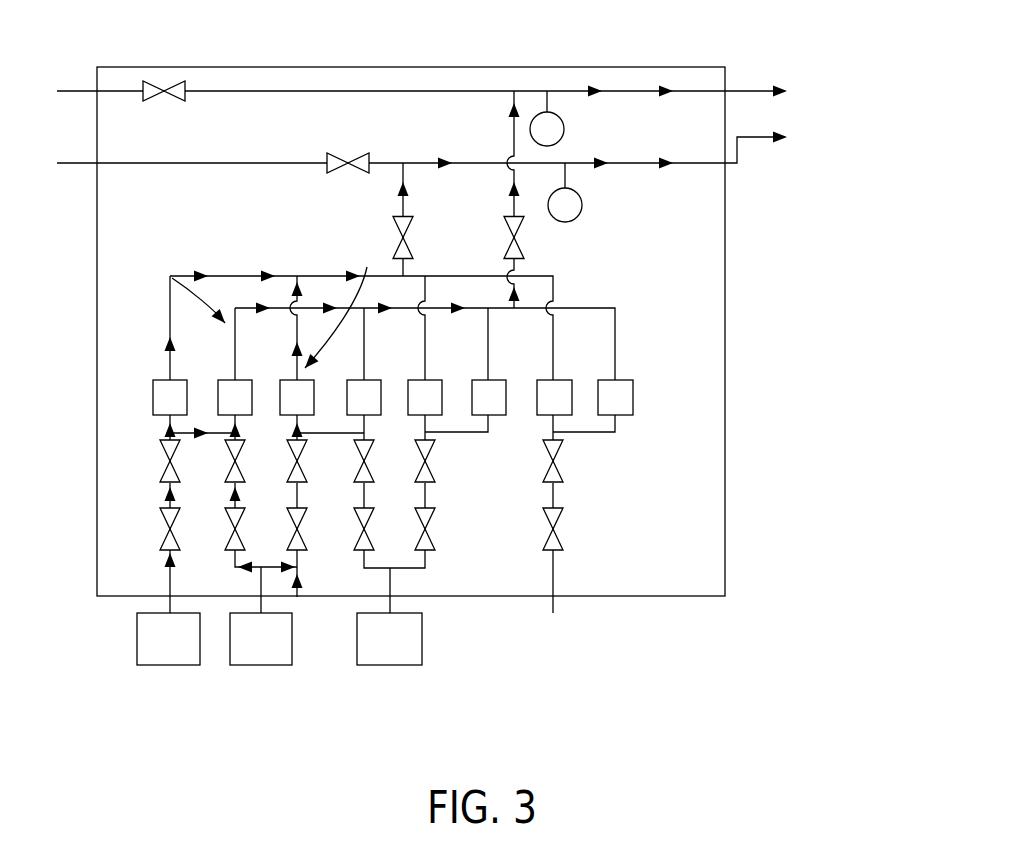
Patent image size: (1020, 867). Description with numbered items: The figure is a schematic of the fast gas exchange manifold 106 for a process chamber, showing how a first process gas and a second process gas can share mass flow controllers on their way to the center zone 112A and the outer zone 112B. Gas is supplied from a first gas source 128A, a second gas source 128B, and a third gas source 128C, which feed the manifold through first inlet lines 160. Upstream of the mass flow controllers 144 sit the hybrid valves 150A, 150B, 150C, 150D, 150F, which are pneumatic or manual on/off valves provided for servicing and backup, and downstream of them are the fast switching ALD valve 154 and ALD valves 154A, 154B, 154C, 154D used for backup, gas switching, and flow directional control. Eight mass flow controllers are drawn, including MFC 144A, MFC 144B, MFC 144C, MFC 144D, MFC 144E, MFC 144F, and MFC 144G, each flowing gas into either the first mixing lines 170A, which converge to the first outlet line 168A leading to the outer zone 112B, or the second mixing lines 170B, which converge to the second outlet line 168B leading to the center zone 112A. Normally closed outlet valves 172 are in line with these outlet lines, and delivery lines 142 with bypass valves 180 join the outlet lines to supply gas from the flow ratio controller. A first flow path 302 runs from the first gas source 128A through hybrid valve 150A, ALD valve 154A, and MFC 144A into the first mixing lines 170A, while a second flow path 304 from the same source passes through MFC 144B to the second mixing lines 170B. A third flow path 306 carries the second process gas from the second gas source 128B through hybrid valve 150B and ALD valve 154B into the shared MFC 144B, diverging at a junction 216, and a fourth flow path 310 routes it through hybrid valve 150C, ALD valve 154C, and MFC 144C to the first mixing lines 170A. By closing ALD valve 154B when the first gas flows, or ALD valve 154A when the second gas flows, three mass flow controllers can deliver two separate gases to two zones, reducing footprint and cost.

The FGE manifold 106 is at (470, 66).
The center zone 112A is at (840, 68).
The outer zone 112B is at (840, 152).
The first gas source 128A is at (190, 656).
The second gas source 128B is at (282, 656).
The third gas source 128C is at (410, 656).
The delivery lines 142 is at (68, 90).
The mass flow controllers 144 is at (635, 360).
The MFC 144A is at (153, 395).
The MFC 144B is at (218, 383).
The MFC 144C is at (280, 383).
The MFC 144D is at (382, 380).
The MFC 144E is at (442, 380).
The MFC 144F is at (494, 380).
The MFC 144G is at (562, 380).
The hybrid valve 150A is at (163, 520).
The hybrid valve 150B is at (298, 567).
The hybrid valve 150C is at (303, 517).
The hybrid valve 150D is at (368, 525).
The hybrid valve 150F is at (565, 528).
The ALD valve 154 is at (565, 462).
The ALD valve 154A is at (165, 457).
The ALD valve 154B is at (223, 463).
The ALD valve 154C is at (282, 481).
The ALD valve 154D is at (368, 460).
The first inlet lines 160 is at (172, 588).
The first outlet line 168A is at (630, 165).
The second outlet line 168B is at (620, 93).
The first mixing lines 170A is at (226, 276).
The second mixing lines 170B is at (580, 307).
The outlet valves 172 is at (405, 238).
The bypass valves 180 is at (148, 82).
The junction 216 is at (300, 468).
The first flow path 302 is at (163, 303).
The second flow path 304 is at (170, 277).
The third flow path 306 is at (223, 490).
The fourth flow path 310 is at (342, 299).